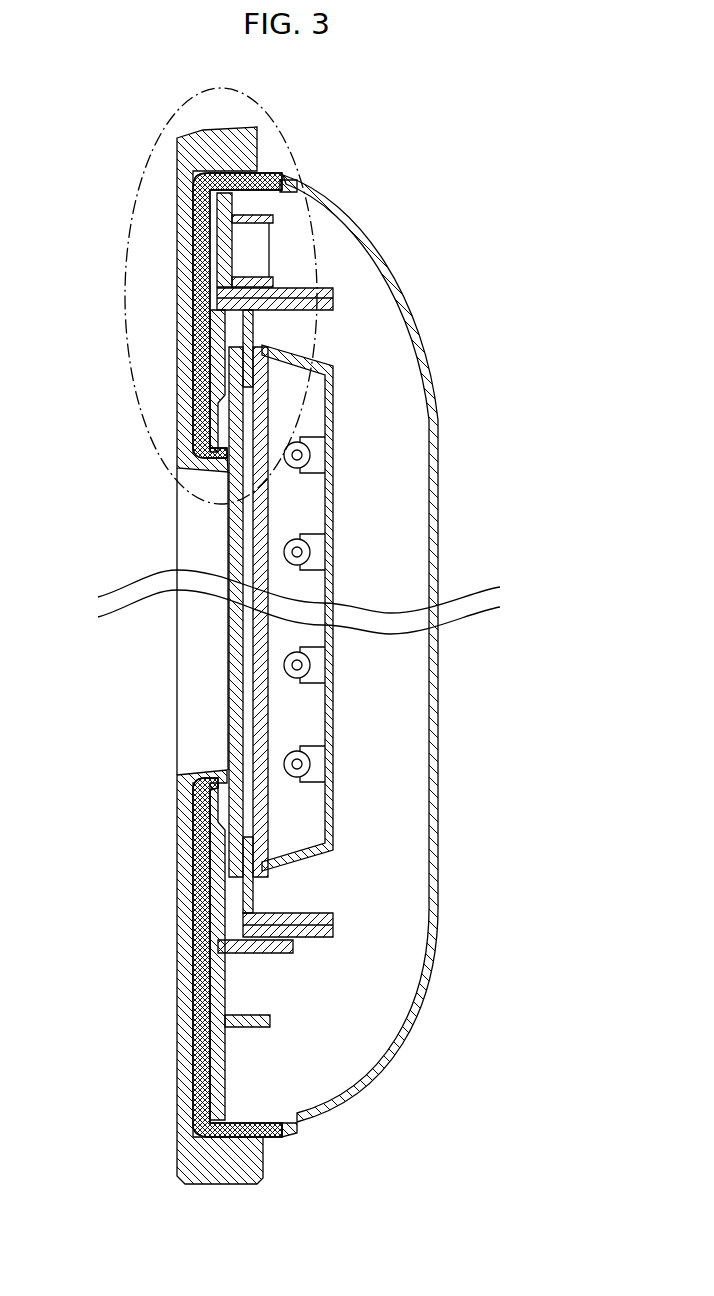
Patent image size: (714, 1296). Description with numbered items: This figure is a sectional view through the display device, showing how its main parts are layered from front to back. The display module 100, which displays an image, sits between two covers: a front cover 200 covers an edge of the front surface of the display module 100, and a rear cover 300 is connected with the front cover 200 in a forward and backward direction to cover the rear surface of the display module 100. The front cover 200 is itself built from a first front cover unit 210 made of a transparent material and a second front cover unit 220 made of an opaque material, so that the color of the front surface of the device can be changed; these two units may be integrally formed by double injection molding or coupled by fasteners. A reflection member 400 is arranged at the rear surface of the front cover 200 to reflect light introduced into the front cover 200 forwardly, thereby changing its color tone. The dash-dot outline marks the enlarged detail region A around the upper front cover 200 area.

The display module 100 is at (226, 538).
The front cover 200 is at (172, 295).
The first front cover unit 210 is at (187, 237).
The second front cover unit 220 is at (203, 208).
The rear cover 300 is at (424, 309).
The reflection member 400 is at (275, 241).
The detail region A is at (160, 138).